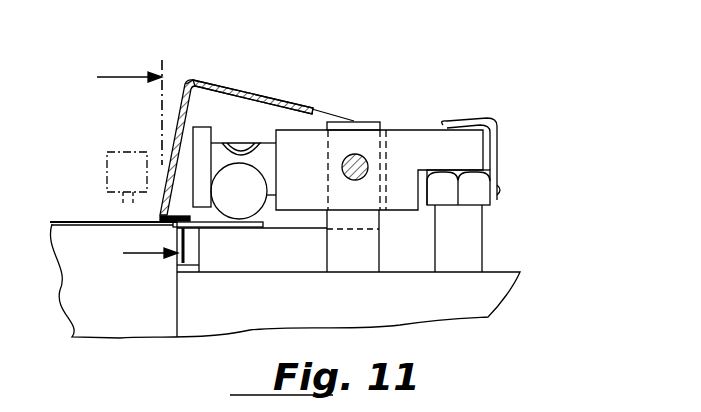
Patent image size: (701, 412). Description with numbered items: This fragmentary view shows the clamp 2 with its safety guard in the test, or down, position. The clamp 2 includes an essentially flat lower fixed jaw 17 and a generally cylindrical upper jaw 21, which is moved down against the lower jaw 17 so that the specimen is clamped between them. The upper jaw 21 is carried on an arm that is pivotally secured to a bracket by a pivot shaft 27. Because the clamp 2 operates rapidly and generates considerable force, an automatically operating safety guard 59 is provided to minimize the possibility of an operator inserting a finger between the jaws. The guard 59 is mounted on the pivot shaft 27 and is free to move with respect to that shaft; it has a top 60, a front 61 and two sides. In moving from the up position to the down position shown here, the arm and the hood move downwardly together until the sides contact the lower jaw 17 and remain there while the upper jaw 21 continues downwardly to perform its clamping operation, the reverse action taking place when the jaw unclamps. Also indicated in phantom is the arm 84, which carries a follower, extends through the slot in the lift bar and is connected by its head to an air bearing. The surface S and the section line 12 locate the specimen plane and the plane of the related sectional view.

The clamp 2 is at (426, 124).
The section line 12- 12 is at (125, 163).
The lower fixed jaw 17 is at (290, 257).
The upper jaw 21 is at (238, 211).
The pivot shaft 27 is at (354, 155).
The guard 59 is at (171, 137).
The top 60 is at (245, 92).
The front 61 is at (213, 106).
The arm 84 is at (107, 185).
The surface S is at (68, 222).